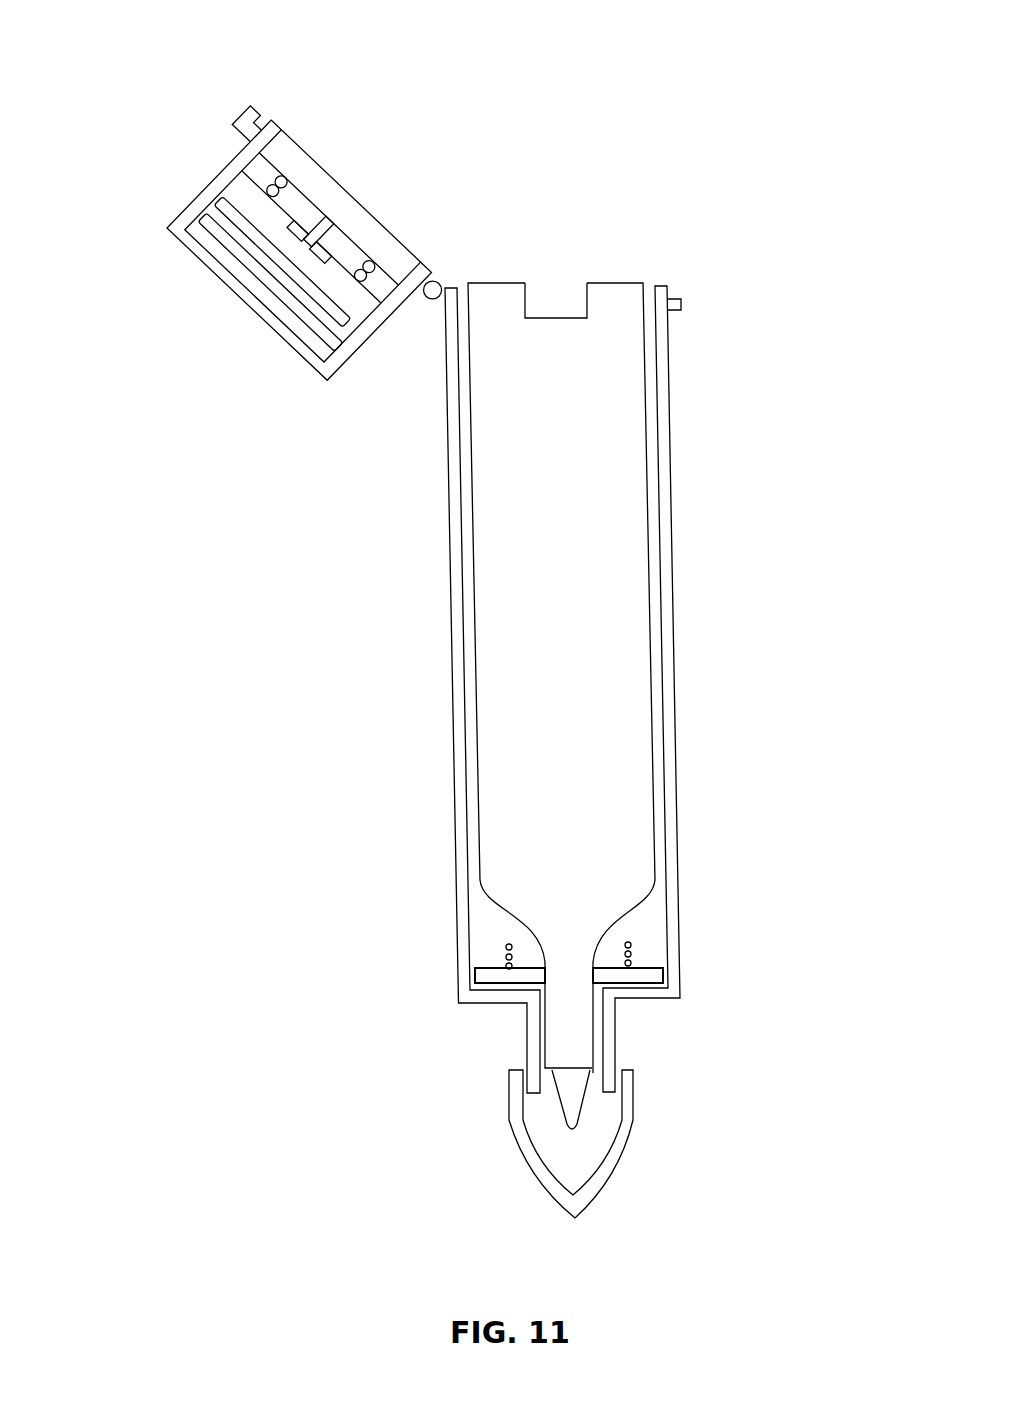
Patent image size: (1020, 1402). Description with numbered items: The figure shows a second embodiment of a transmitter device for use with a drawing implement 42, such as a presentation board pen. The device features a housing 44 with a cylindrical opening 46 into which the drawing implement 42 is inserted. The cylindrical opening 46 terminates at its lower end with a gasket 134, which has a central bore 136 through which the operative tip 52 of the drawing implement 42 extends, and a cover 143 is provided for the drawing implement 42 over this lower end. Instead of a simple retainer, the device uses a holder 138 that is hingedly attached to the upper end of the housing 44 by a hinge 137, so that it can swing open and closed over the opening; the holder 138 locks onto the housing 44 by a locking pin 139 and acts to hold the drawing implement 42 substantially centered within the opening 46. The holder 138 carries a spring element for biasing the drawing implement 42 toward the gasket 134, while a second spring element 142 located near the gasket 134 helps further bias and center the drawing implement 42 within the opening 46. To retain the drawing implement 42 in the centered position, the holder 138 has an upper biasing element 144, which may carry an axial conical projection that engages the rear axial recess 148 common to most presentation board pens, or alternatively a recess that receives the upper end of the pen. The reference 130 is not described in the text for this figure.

The cap 130 is at (196, 199).
The locking pin 139 is at (247, 110).
The upper biasing element 144 is at (377, 175).
The holder 138 is at (238, 300).
The hinge 137 is at (425, 300).
The rear axial recess 148 is at (548, 318).
The drawing implement 42 is at (580, 552).
The housing 44 is at (675, 717).
The cylindrical opening 46 is at (652, 907).
The second spring element 142 is at (631, 955).
The gasket 134 is at (640, 976).
The central bore 136 is at (613, 978).
The operative tip 52 is at (578, 1095).
The cover 143 is at (580, 1165).